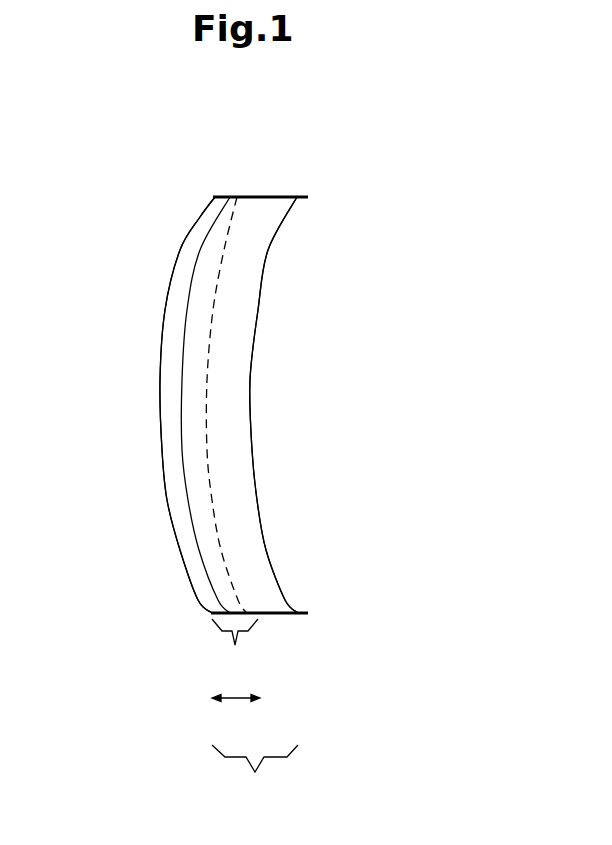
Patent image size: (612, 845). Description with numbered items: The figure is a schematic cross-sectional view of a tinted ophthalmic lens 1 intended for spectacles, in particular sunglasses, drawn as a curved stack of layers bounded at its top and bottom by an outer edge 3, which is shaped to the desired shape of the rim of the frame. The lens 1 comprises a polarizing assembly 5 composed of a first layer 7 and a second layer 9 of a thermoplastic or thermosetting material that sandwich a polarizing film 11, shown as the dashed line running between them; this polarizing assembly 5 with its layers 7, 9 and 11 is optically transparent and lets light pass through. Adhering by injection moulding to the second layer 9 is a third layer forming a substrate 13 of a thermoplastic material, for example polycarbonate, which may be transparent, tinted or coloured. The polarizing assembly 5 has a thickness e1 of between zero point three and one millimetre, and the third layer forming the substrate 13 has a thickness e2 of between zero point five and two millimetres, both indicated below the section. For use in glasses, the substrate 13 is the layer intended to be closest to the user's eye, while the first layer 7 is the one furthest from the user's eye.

The ophthalmic lens 1 is at (342, 293).
The outer edge 3 is at (289, 186).
The polarizing assembly 5 is at (235, 652).
The first layer 7 is at (156, 314).
The second layer 9 is at (237, 197).
The polarizing film 11 is at (232, 197).
The substrate 13 is at (237, 438).
The thickness of the polarizing assembly e1 is at (236, 720).
The thickness of the substrate e2 is at (255, 777).